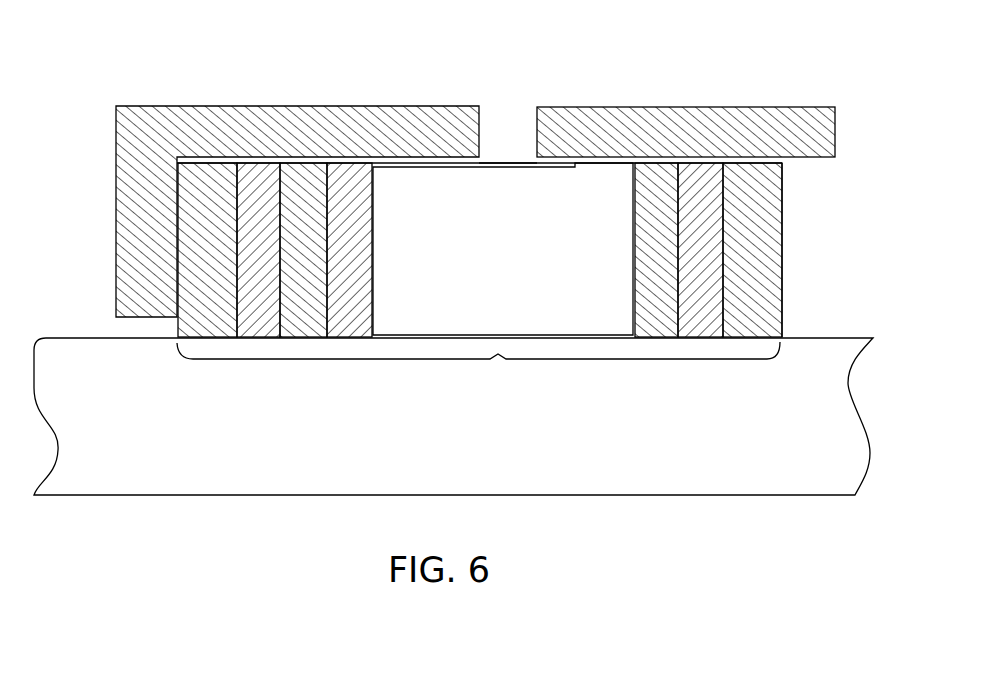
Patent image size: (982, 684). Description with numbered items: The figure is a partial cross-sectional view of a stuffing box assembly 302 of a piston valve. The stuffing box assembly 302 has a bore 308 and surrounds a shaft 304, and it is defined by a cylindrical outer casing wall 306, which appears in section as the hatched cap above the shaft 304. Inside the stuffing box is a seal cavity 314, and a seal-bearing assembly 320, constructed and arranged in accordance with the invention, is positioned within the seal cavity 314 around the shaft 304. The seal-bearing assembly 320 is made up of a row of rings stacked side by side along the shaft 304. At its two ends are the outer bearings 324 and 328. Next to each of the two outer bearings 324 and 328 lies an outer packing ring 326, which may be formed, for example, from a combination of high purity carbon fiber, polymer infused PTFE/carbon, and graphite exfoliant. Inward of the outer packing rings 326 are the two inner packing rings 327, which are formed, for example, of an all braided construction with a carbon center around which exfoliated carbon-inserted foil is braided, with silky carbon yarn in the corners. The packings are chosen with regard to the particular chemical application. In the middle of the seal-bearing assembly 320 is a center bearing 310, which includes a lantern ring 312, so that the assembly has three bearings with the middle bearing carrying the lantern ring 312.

The stuffing box assembly 302 is at (260, 78).
The shaft 304 is at (91, 450).
The outer casing wall 306 is at (442, 110).
The bore 308 is at (450, 166).
The center bearing 310 is at (485, 250).
The lantern ring 312 is at (503, 160).
The seal cavity 314 is at (792, 173).
The seal-bearing assembly 320 is at (478, 367).
The outer bearing 324 is at (734, 249).
The outer packing rings 326 is at (240, 249).
The inner packing rings 327 is at (331, 249).
The outer bearing 328 is at (189, 249).